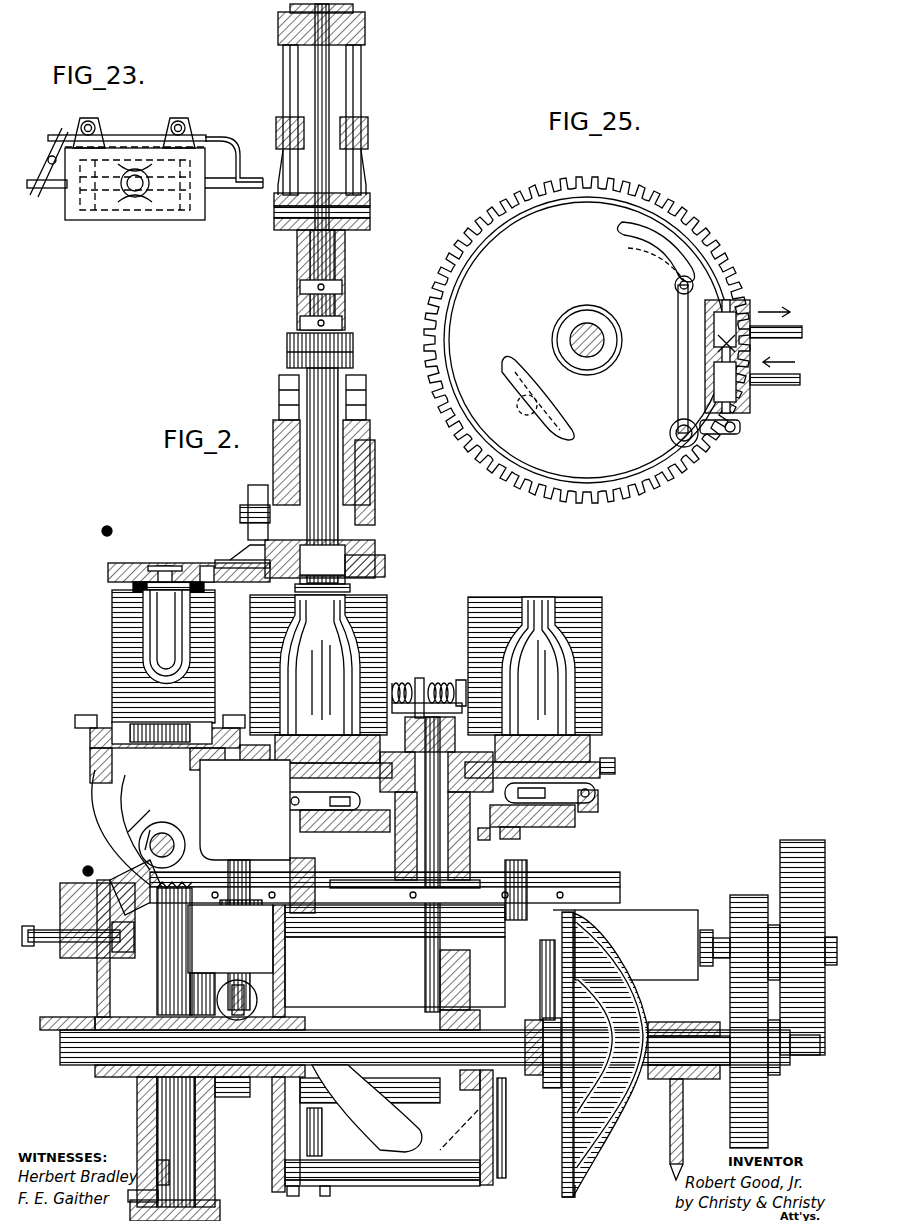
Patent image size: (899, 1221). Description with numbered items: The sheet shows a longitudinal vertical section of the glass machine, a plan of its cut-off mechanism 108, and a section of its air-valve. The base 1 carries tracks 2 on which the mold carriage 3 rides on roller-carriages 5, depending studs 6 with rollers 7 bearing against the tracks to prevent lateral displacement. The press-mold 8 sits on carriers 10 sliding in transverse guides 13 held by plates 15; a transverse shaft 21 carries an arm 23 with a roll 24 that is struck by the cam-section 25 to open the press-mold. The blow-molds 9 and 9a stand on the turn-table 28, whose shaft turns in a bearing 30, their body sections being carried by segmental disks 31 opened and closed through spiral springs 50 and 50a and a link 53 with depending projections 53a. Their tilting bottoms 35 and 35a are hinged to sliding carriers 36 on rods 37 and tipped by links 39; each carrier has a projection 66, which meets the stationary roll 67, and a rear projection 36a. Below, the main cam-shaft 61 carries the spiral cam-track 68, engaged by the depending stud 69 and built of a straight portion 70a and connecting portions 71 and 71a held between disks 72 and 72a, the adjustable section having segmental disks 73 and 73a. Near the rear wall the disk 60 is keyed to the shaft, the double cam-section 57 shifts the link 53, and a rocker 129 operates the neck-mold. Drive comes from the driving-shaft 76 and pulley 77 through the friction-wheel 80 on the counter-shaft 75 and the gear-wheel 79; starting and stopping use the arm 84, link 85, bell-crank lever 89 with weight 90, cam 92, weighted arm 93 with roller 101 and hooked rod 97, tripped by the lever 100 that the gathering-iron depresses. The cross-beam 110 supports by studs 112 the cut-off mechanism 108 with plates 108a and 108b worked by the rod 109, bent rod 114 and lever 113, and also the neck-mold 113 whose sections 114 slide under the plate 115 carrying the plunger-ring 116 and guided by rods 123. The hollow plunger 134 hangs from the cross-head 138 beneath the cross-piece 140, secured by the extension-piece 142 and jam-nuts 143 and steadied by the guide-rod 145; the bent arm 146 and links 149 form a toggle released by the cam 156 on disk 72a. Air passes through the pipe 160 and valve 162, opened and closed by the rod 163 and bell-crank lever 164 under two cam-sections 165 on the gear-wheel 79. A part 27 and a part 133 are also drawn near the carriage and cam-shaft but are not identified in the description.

In FIG. 2, the main frame or base 1 is at (215, 1146).
In FIG. 2, the longitudinal tracks 2 is at (443, 942).
In FIG. 2, the primary mold support or carriage 3 is at (245, 810).
In FIG. 2, the roller-carriages 5 is at (620, 895).
In FIG. 2, the depending pins or studs 6 is at (232, 880).
In FIG. 2, the rollers 7 is at (245, 905).
In FIG. 2, the press-mold 8 is at (112, 650).
In FIG. 2, the blow-mold 9 is at (375, 640).
In FIG. 2, the blow-mold 9a is at (595, 636).
In FIG. 2, the carriers 10 is at (150, 736).
In FIG. 2, the transverse guides or grooves 13 is at (90, 744).
In FIG. 2, the plates 15 is at (80, 716).
In FIG. 2, the transverse shaft 21 is at (160, 840).
In FIG. 2, the downwardly-projecting arm 23 is at (132, 858).
In FIG. 2, the roll 24 is at (140, 904).
In FIG. 2, the cam-section 25 is at (375, 1118).
In FIG. 2, the arm 27 is at (105, 800).
In FIG. 2, the turn-table 28 is at (600, 766).
In FIG. 2, the bearing 30 is at (405, 869).
In FIG. 2, the segmental disks 31 is at (262, 765).
In FIG. 2, the tilting bottom 35 is at (302, 742).
In FIG. 2, the tilting bottom 35a is at (540, 745).
In FIG. 2, the sliding mold-bottom carrier 36 is at (300, 815).
In FIG. 2, the rear projection 36a is at (512, 832).
In FIG. 2, the horizontal parallel guides or rods 37 is at (598, 805).
In FIG. 2, the link 39 is at (662, 786).
In FIG. 2, the spiral spring 50 is at (400, 683).
In FIG. 2, the spiral spring 50a is at (444, 683).
In FIG. 2, the link 53 is at (472, 830).
In FIG. 2, the depending projections 53a is at (395, 840).
In FIG. 2, the cam-section 57 is at (605, 1148).
In FIG. 2, the disk 60 is at (576, 1192).
In FIG. 25, the main cam-shaft 61 is at (606, 343).
In FIG. 2, the main cam-shaft 61 is at (362, 1040).
In FIG. 2, the projection 66 is at (288, 836).
In FIG. 2, the stationary roll 67 is at (268, 845).
In FIG. 2, the continuous spiral cam-track 68 is at (382, 1197).
In FIG. 2, the depending stud 69 is at (302, 885).
In FIG. 2, the straight portion 70a is at (452, 980).
In FIG. 2, the longitudinal connecting portion 71 is at (395, 940).
In FIG. 2, the longitudinal connecting portion 71a is at (360, 1180).
In FIG. 2, the circular disk 72 is at (300, 990).
In FIG. 2, the circular disk 72a is at (480, 1105).
In FIG. 2, the segmental disk 73 is at (282, 1158).
In FIG. 2, the segmental disk 73a is at (478, 1160).
In FIG. 2, the counter-shaft 75 is at (260, 1090).
In FIG. 2, the main driving-shaft 76 is at (716, 936).
In FIG. 2, the driving-pulley 77 is at (814, 845).
In FIG. 25, the gear-wheel 79 is at (587, 340).
In FIG. 2, the gear-wheel 79 is at (740, 1012).
In FIG. 2, the friction-wheel 80 is at (165, 990).
In FIG. 2, the downwardly-projecting arm 84 is at (62, 1023).
In FIG. 2, the link 85 is at (240, 990).
In FIG. 2, the bell-crank lever 89 is at (161, 1142).
In FIG. 2, the weight 90 is at (174, 1201).
In FIG. 2, the cam 92 is at (137, 1120).
In FIG. 2, the weighted arm 93 is at (97, 1000).
In FIG. 2, the rod 97 is at (84, 870).
In FIG. 2, the lever 100 is at (110, 529).
In FIG. 2, the roller 101 is at (118, 936).
In FIG. 23, the cut-off mechanism 108 is at (72, 212).
In FIG. 2, the cut-off mechanism 108 is at (125, 558).
In FIG. 23, the knife plate 108a is at (100, 212).
In FIG. 2, the knife plate 108a is at (133, 588).
In FIG. 23, the knife plate 108b is at (182, 212).
In FIG. 2, the knife plate 108b is at (135, 585).
In FIG. 23, the rod 109 is at (225, 183).
In FIG. 2, the cross-beam 110 is at (360, 504).
In FIG. 23, the depending bolts or studs 112 is at (88, 123).
In FIG. 2, the depending bolts or studs 112 is at (248, 497).
In FIG. 23, the neck-mold 113 is at (46, 158).
In FIG. 2, the neck-mold 113 is at (346, 578).
In FIG. 23, the neck-mold sections 114 is at (125, 136).
In FIG. 2, the neck-mold sections 114 is at (232, 562).
In FIG. 2, the plate 115 is at (386, 556).
In FIG. 2, the plunger-ring 116 is at (360, 540).
In FIG. 2, the vertical guide-rods 123 is at (279, 384).
In FIG. 2, the rocker 129 is at (536, 1080).
In FIG. 2, the hub 133 is at (562, 1145).
In FIG. 2, the pressing-plunger 134 is at (340, 374).
In FIG. 2, the cross-head 138 is at (346, 242).
In FIG. 2, the cross-piece 140 is at (366, 28).
In FIG. 2, the upper extension-piece 142 is at (354, 344).
In FIG. 2, the jam-nuts 143 is at (342, 289).
In FIG. 2, the guide-rod 145 is at (330, 78).
In FIG. 2, the bent arm or bell-crank 146 is at (283, 95).
In FIG. 2, the links 149 is at (276, 140).
In FIG. 2, the cam 156 is at (506, 1180).
In FIG. 25, the pipe 160 is at (810, 352).
In FIG. 25, the valve 162 is at (718, 350).
In FIG. 25, the rod 163 is at (745, 425).
In FIG. 25, the bell-crank lever 164 is at (680, 390).
In FIG. 25, the cam-sections 165 is at (640, 243).